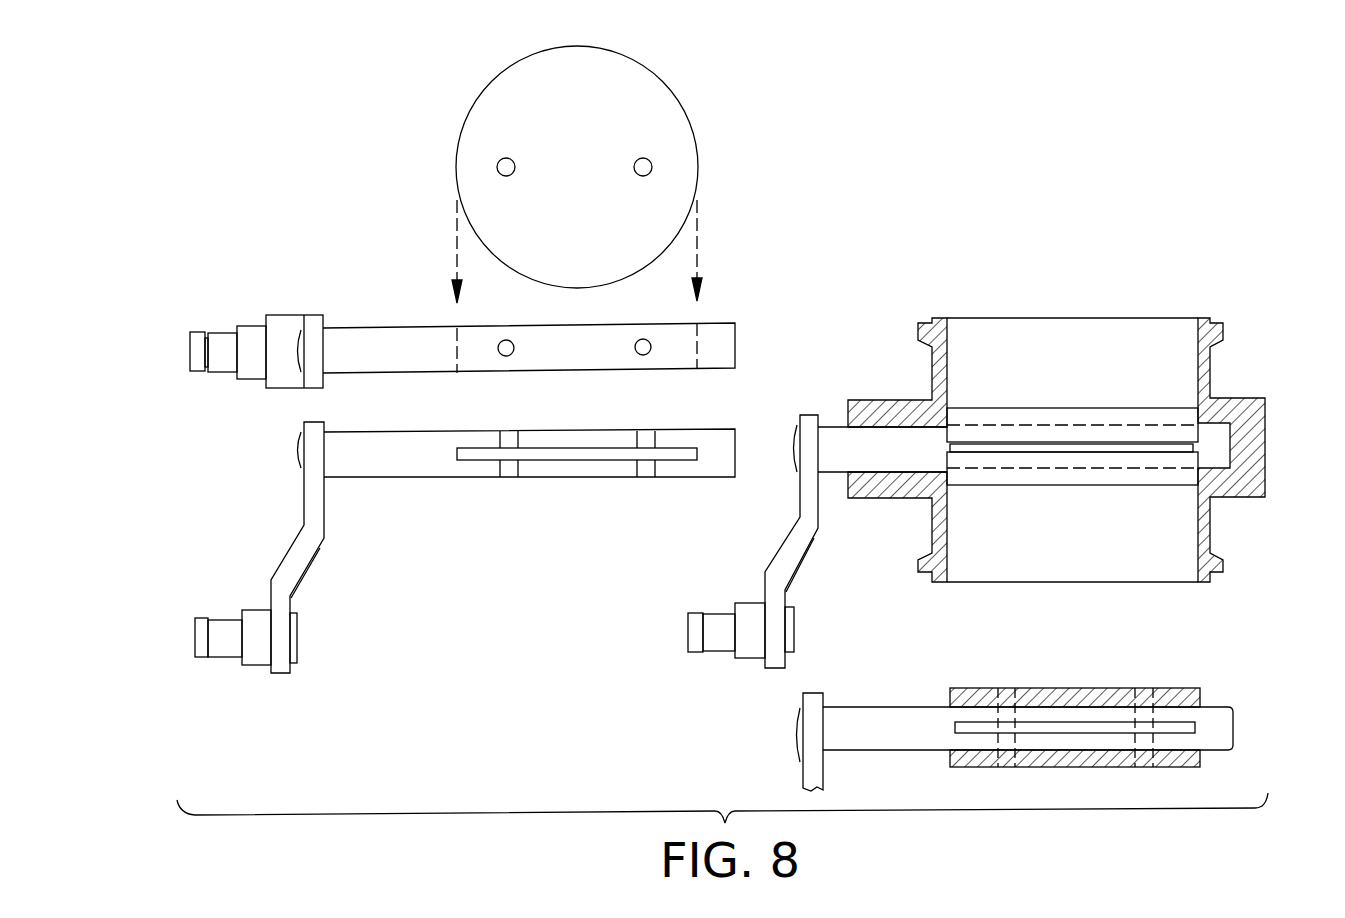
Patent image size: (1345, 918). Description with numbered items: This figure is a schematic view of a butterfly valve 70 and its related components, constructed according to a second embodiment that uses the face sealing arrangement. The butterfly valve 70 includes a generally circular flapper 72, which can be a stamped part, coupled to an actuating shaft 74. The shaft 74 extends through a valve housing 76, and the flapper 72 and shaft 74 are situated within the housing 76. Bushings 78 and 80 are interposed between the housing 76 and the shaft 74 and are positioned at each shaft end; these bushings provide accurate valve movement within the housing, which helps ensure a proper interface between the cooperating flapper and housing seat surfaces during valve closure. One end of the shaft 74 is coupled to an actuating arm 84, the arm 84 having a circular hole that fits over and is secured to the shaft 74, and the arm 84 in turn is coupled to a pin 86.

The butterfly valve 70 is at (1086, 395).
The flapper 72 is at (672, 113).
The actuating shaft 74 is at (593, 319).
The valve housing 76 is at (1213, 357).
The bushing 78 is at (1172, 413).
The bushing 80 is at (888, 427).
The actuating arm 84 is at (315, 570).
The pin 86 is at (218, 660).